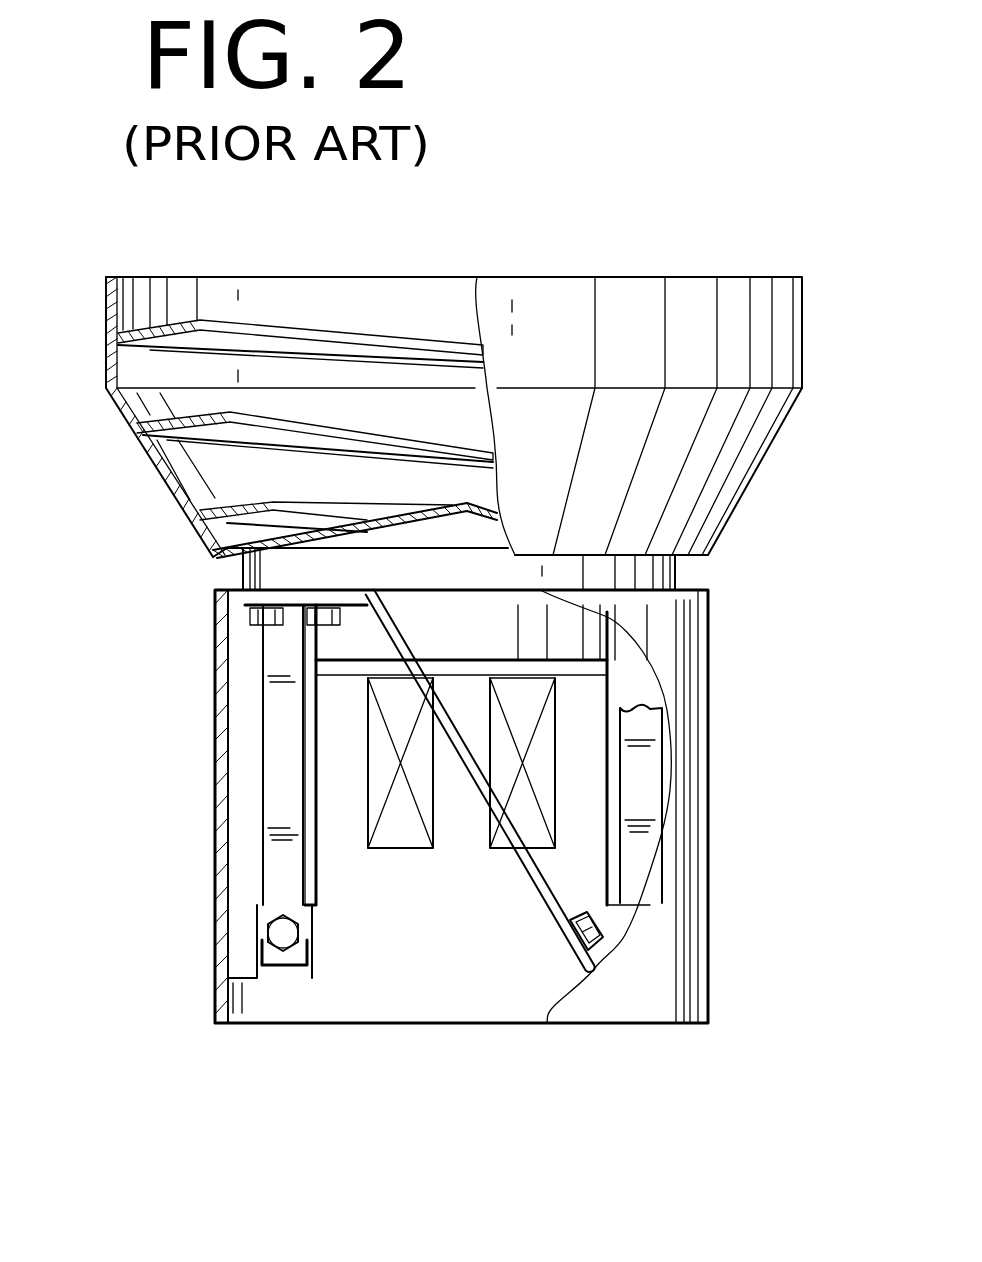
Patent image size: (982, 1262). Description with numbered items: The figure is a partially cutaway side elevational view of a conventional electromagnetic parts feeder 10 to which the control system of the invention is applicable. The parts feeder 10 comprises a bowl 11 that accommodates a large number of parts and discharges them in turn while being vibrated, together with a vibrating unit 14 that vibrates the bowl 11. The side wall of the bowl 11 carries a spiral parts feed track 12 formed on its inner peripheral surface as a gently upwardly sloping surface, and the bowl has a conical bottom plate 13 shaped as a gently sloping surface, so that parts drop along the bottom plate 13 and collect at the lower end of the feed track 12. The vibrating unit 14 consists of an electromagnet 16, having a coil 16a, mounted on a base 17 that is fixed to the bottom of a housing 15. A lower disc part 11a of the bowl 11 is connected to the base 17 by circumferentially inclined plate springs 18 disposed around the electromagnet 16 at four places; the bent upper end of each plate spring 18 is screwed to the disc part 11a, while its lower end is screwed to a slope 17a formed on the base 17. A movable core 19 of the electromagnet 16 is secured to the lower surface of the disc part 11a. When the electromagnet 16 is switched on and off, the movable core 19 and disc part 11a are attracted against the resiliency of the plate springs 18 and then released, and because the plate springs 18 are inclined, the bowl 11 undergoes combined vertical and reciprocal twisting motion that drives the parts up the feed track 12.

The parts feeder 10 is at (760, 510).
The bowl 11 is at (113, 313).
The lower disc part 11a is at (678, 565).
The spiral parts feed track 12 is at (182, 333).
The conical bottom plate 13 is at (470, 498).
The vibrating unit 14 is at (207, 878).
The housing 15 is at (217, 827).
The electromagnet 16 is at (328, 715).
The coil 16a is at (492, 840).
The base 17 is at (312, 1003).
The slope 17a is at (603, 968).
The plate spring 18 is at (268, 743).
The movable core 19 is at (558, 640).